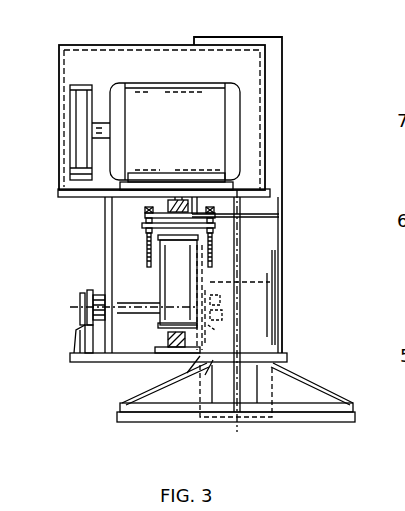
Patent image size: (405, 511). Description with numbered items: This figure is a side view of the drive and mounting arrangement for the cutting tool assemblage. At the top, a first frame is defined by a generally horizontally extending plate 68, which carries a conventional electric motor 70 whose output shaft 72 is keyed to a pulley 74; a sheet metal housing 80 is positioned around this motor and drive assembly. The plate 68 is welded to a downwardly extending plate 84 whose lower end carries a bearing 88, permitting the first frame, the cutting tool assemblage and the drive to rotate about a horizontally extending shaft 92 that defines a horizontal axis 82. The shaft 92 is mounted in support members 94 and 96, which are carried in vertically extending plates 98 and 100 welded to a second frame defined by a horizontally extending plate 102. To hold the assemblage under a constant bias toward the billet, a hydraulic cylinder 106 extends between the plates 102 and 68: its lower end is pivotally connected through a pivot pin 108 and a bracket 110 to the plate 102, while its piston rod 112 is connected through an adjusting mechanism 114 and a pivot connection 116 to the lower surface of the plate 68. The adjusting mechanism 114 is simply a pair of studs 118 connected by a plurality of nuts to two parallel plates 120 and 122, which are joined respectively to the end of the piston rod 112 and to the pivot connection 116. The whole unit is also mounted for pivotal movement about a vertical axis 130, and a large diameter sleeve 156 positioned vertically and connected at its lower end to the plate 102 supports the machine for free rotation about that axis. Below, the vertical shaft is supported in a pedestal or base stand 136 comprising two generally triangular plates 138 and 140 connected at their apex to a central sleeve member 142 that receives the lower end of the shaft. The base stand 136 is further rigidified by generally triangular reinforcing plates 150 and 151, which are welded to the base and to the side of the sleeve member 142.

The sheet metal housing 80 is at (143, 44).
The horizontally extending plate 68 is at (60, 193).
The pulley 74 is at (97, 86).
The output shaft 72 is at (107, 130).
The electric motor 70 is at (160, 87).
The pivot connection 116 is at (178, 200).
The parallel plate 122 is at (145, 214).
The parallel plate 120 is at (142, 229).
The studs 118 is at (147, 253).
The downwardly extending plate 84 is at (105, 245).
The piston rod 112 is at (160, 250).
The hydraulic cylinder 106 is at (165, 272).
The shaft 92 is at (137, 303).
The horizontally extending axis 82 is at (82, 308).
The support member 94 is at (84, 322).
The vertically extending plate 98 is at (88, 342).
The horizontally extending plate 102 is at (78, 358).
The bearing 88 is at (117, 323).
The bracket 110 is at (162, 372).
The vertically extending plate 100 is at (157, 350).
The pivot pin 108 is at (173, 337).
The adjusting mechanism 114 is at (224, 242).
The support member 96 is at (214, 327).
The large diameter sleeve 156 is at (268, 305).
The pedestal or base stand 136 is at (315, 386).
The reinforcing plate 151 is at (137, 402).
The triangular shaped plate 140 is at (140, 421).
The central sleeve member 142 is at (256, 391).
The vertical axis 130 is at (237, 427).
The triangular shaped plate 138 is at (312, 422).
The reinforcing plate 150 is at (327, 402).